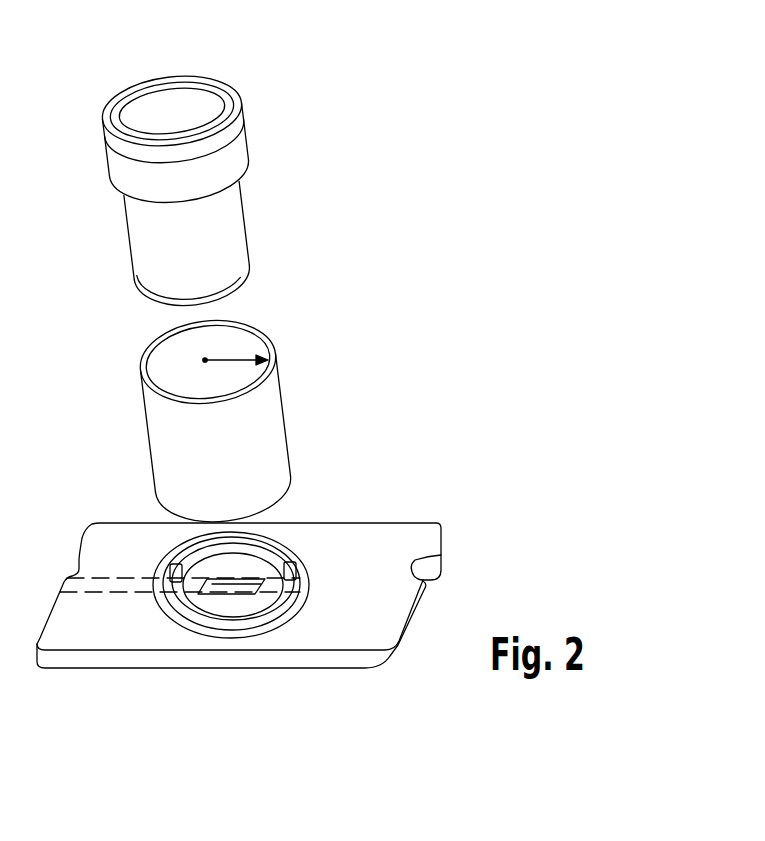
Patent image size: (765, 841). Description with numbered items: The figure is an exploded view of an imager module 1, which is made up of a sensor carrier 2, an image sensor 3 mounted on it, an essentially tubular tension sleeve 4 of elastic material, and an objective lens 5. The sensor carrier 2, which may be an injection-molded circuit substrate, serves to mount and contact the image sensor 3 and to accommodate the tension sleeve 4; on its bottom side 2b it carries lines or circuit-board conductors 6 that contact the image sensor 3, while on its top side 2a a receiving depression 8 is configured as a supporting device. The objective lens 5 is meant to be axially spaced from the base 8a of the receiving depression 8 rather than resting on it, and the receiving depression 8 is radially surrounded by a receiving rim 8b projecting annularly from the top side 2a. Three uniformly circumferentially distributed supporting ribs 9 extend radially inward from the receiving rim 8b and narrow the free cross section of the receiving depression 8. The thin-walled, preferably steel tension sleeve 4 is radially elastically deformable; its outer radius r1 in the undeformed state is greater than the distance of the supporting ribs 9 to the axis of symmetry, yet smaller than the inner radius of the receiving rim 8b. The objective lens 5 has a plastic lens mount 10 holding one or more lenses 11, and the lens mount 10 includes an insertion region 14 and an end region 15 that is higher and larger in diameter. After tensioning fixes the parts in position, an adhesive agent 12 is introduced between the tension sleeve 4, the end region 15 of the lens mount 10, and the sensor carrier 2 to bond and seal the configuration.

The imager module 1 is at (425, 257).
The sensor carrier 2 is at (418, 540).
The top side 2a is at (362, 536).
The bottom side 2b is at (367, 668).
The image sensor 3 is at (217, 587).
The tension sleeve 4 is at (265, 432).
The objective lens 5 is at (230, 243).
The circuit-board conductors 6 is at (62, 603).
The receiving depression 8 is at (305, 596).
The base 8a is at (267, 613).
The receiving rim 8b is at (285, 544).
The supporting ribs 9 is at (172, 566).
The lens mount 10 is at (143, 255).
The lenses 11 is at (177, 115).
The adhesive agent 12 is at (130, 207).
The insertion region 14 is at (158, 292).
The end region 15 is at (112, 173).
The outer radius r1 is at (262, 356).